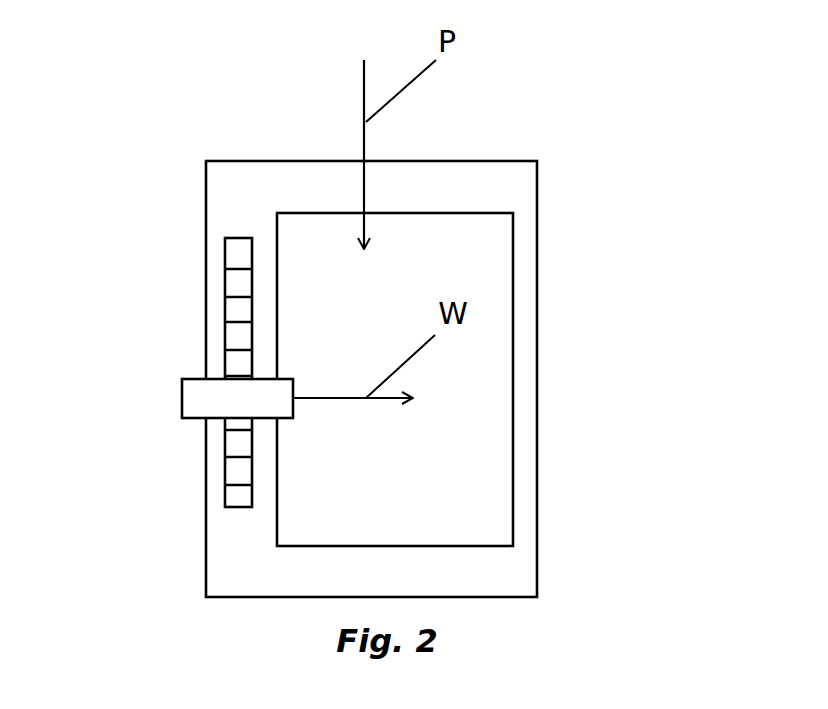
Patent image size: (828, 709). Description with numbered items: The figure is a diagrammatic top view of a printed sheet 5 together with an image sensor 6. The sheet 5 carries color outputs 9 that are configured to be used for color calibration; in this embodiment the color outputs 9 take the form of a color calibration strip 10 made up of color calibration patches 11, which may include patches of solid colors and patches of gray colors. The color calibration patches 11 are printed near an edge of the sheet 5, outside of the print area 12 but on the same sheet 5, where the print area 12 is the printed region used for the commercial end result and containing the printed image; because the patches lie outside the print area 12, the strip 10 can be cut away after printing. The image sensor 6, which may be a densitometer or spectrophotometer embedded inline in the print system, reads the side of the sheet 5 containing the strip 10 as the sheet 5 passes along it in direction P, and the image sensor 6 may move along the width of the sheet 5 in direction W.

The printed sheet 5 is at (518, 187).
The image sensor 6 is at (205, 393).
The color outputs 9 is at (220, 338).
The color calibration strip 10 is at (215, 478).
The color calibration patches 11 is at (235, 250).
The print area 12 is at (381, 491).